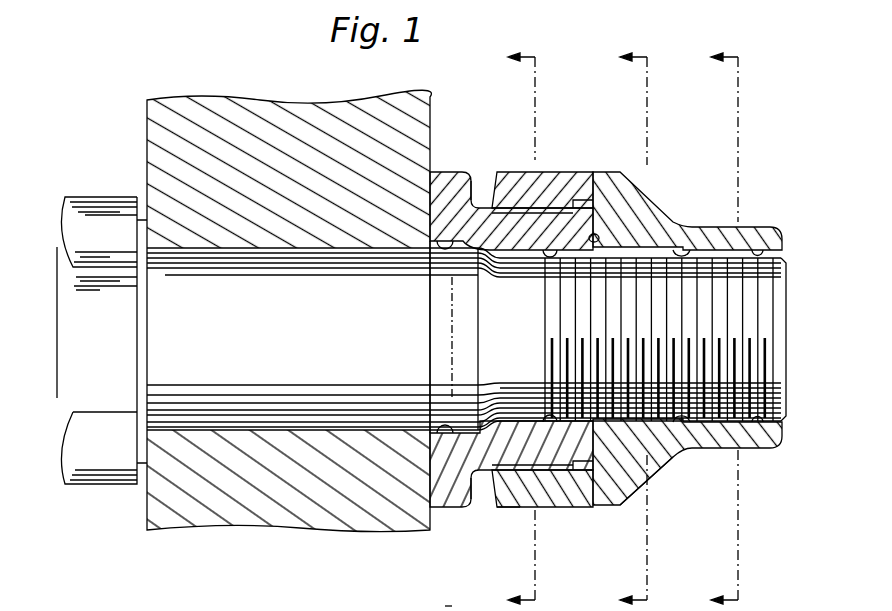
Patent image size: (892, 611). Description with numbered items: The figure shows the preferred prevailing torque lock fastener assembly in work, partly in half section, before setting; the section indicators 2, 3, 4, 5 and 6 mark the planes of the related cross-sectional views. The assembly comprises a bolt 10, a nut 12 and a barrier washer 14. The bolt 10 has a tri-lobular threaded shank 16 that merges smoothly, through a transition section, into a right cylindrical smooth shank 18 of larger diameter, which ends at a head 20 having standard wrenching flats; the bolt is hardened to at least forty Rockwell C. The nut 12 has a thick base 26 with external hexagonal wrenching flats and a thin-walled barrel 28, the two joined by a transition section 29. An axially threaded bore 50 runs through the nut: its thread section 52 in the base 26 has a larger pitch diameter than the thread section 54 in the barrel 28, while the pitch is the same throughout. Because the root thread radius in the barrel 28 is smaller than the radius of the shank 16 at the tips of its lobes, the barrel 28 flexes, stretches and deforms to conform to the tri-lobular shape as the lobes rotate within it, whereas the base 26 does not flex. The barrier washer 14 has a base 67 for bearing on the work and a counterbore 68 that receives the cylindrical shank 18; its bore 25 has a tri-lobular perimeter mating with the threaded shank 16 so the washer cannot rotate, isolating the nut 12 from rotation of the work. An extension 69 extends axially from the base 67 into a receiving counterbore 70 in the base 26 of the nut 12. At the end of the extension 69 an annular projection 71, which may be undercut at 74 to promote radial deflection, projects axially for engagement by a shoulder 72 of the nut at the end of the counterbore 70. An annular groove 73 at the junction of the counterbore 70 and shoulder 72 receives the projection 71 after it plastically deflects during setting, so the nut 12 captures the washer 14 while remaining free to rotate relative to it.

The section line 2- 2 is at (438, 602).
The section line 3- 3 is at (509, 329).
The section line 4- 4 is at (621, 329).
The section line 5- 5 is at (714, 329).
The section line 6- 6 is at (420, 226).
The bolt 10 is at (76, 188).
The nut 12 is at (546, 165).
The barrier washer 14 is at (438, 163).
The threaded shank 16 is at (774, 348).
The smooth shank 18 is at (338, 332).
The head 20 is at (80, 307).
The bore 25 is at (600, 195).
The base 26 is at (579, 504).
The barrel 28 is at (757, 449).
The transition section 29 is at (650, 470).
The threaded bore 50 is at (684, 250).
The thread section 52 is at (673, 431).
The thread section 54 is at (760, 250).
The base 67 is at (468, 500).
The counterbore 68 is at (468, 195).
The extension 69 is at (509, 504).
The receiving counterbore 70 is at (557, 208).
The annular projection 71 is at (582, 200).
The shoulder 72 is at (606, 233).
The annular groove 73 is at (606, 508).
The undercut 74 is at (570, 503).